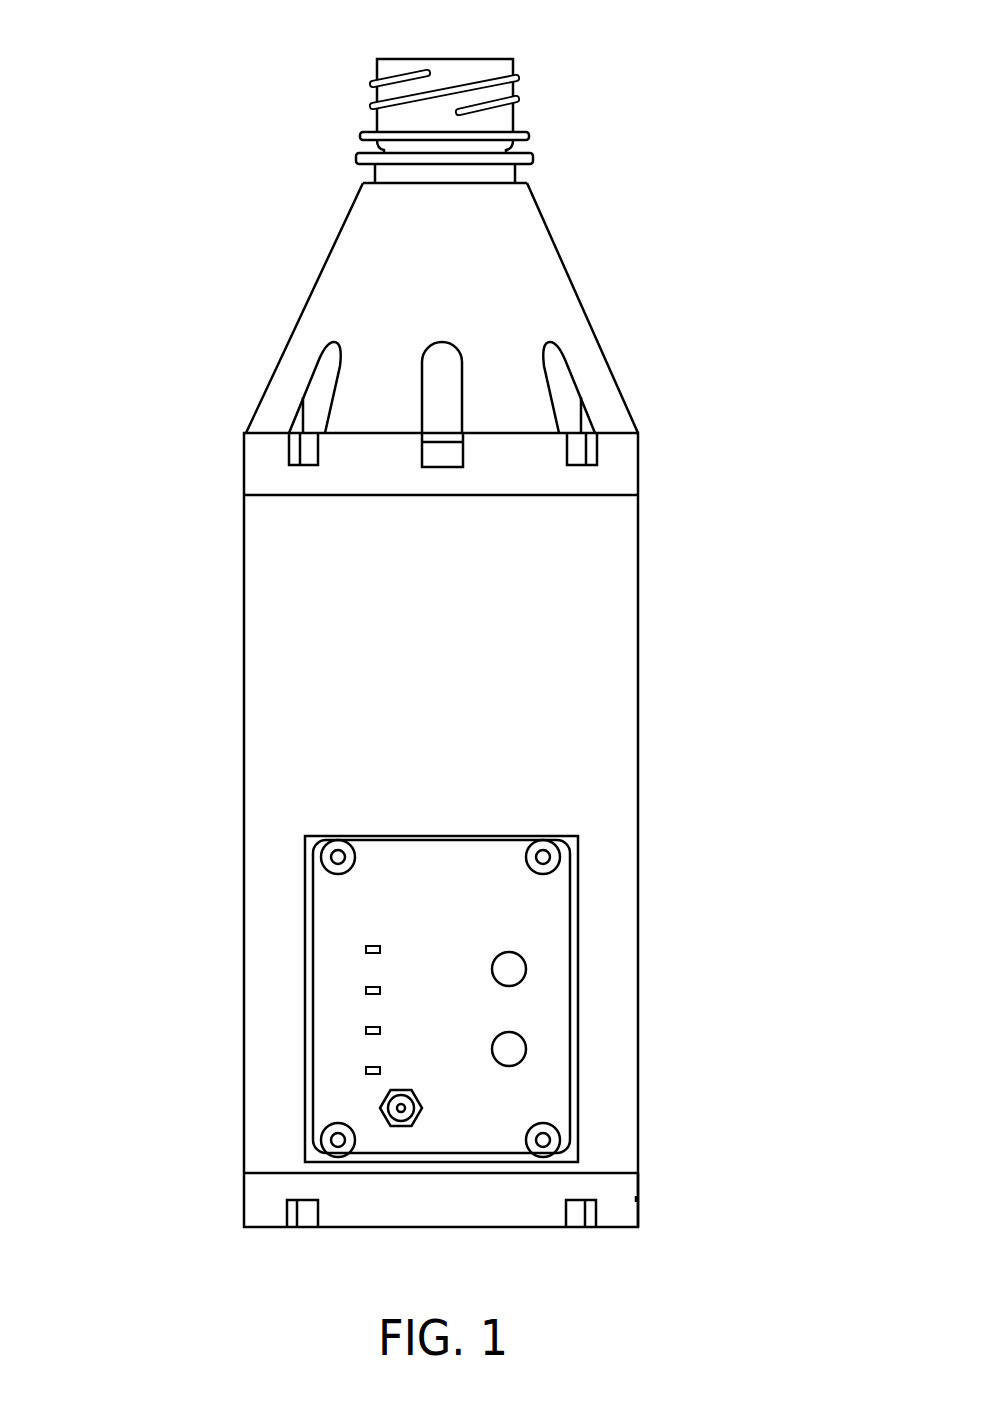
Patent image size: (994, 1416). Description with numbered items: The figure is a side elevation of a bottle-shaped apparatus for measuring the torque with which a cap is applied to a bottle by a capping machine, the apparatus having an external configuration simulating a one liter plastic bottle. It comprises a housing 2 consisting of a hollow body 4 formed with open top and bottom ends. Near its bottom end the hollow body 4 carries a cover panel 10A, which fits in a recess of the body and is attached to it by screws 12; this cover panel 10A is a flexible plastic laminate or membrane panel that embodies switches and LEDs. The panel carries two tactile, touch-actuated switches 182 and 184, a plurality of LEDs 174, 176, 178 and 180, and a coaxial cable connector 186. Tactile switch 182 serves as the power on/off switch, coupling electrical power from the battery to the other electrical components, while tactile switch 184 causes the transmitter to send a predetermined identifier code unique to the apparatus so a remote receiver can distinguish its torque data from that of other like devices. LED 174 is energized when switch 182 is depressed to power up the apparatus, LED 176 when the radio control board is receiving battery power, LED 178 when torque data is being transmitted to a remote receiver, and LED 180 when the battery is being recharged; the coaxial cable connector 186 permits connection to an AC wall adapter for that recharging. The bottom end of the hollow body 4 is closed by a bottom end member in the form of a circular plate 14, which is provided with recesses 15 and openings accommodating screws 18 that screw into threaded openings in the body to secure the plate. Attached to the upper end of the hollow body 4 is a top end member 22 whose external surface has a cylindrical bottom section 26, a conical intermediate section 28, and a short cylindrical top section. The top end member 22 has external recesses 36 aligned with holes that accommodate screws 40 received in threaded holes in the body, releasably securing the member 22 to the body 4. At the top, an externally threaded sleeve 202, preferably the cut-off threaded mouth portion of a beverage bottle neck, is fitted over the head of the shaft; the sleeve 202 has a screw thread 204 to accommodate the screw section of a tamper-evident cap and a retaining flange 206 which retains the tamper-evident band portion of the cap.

The housing 2 is at (243, 736).
The hollow body 4 is at (640, 728).
The cover panel 10A is at (573, 918).
The screws 12 is at (333, 1140).
The circular plate 14 is at (640, 1206).
The recesses 15 is at (290, 1208).
The screws 18 is at (302, 1228).
The top end member 22 is at (597, 338).
The cylindrical bottom section 26 is at (258, 458).
The conical intermediate section 28 is at (370, 238).
The external recesses 36 is at (323, 380).
The screws 40 is at (312, 453).
The LED 174 is at (366, 1070).
The LED 176 is at (366, 1030).
The LED 178 is at (366, 990).
The LED 180 is at (366, 949).
The tactile switch 182 is at (527, 963).
The tactile switch 184 is at (527, 1043).
The coaxial cable connector 186 is at (422, 1120).
The externally threaded sleeve 202 is at (517, 62).
The screw thread 204 is at (513, 100).
The retaining flange 206 is at (532, 133).